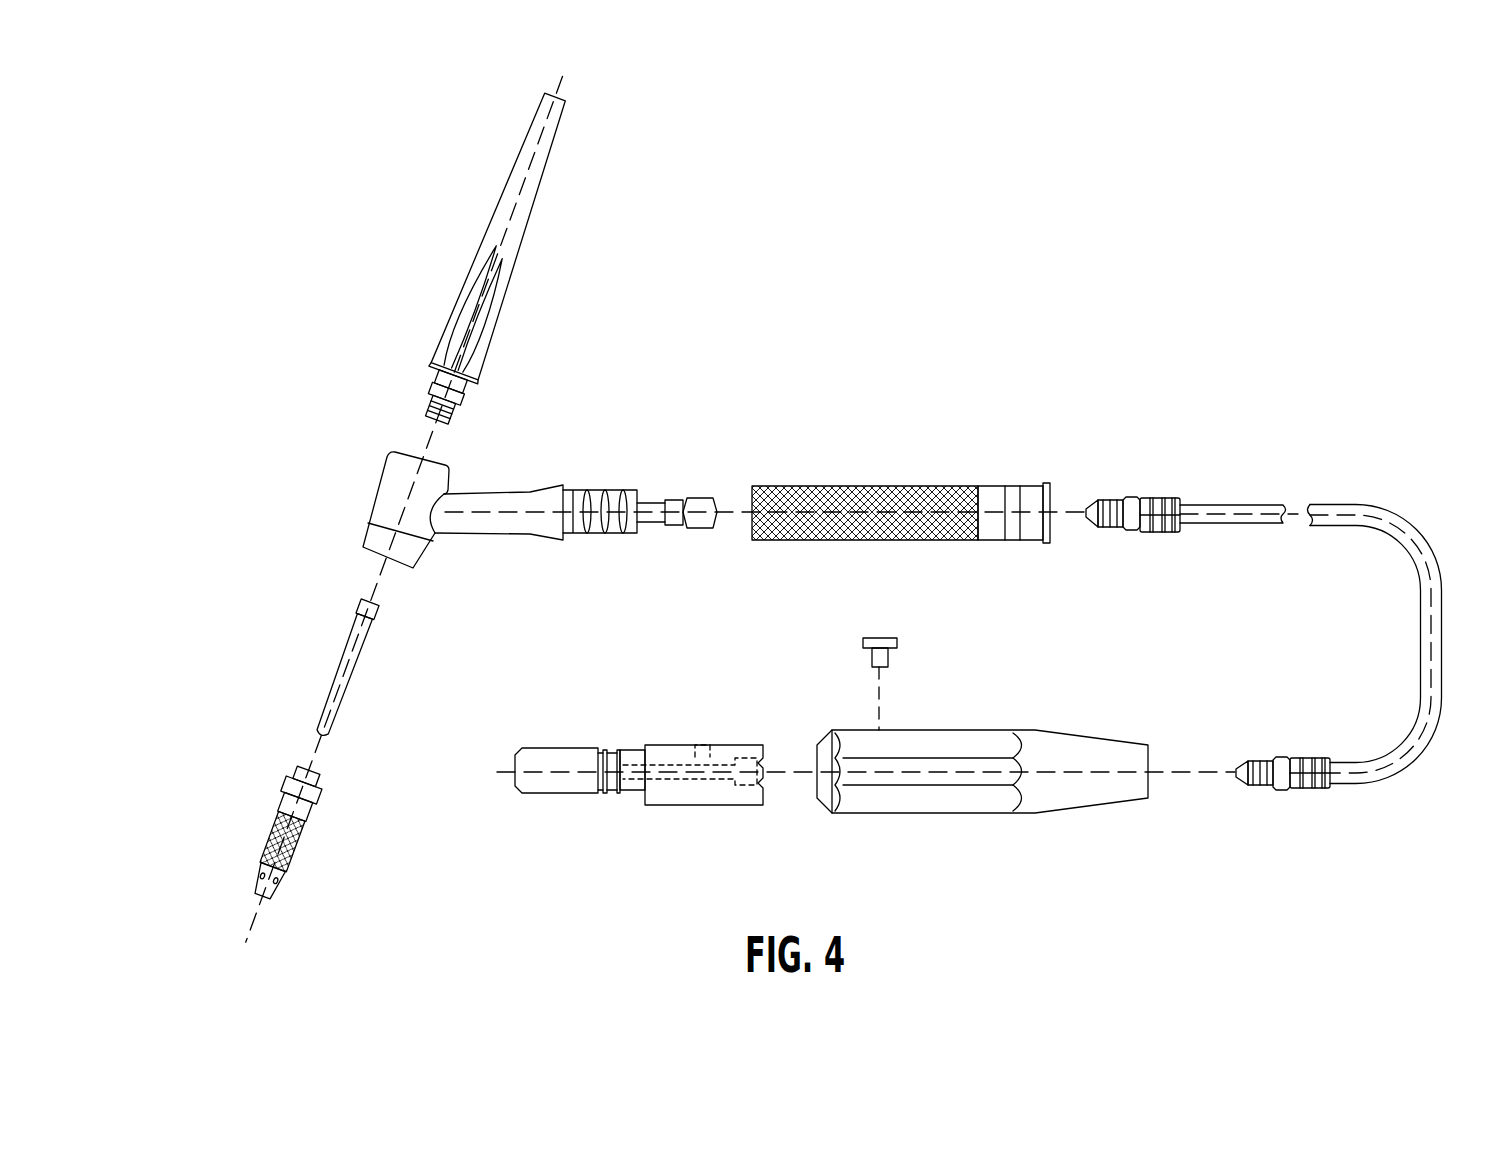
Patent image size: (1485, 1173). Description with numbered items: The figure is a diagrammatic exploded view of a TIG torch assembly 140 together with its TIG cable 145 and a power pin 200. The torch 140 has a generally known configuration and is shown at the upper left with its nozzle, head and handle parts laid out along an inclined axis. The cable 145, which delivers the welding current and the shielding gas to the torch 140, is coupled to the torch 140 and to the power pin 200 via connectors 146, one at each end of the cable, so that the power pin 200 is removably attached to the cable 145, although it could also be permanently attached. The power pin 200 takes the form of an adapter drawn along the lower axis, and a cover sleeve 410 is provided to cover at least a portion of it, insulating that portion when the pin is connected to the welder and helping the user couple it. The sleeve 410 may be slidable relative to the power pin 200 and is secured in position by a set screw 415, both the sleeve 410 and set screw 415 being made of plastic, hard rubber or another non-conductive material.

The TIG torch assembly 140 is at (442, 108).
The TIG cable 145 is at (1420, 647).
The connectors 146 is at (1159, 498).
The power pin 200 is at (704, 806).
The cover sleeve 410 is at (1063, 812).
The set screw 415 is at (885, 638).